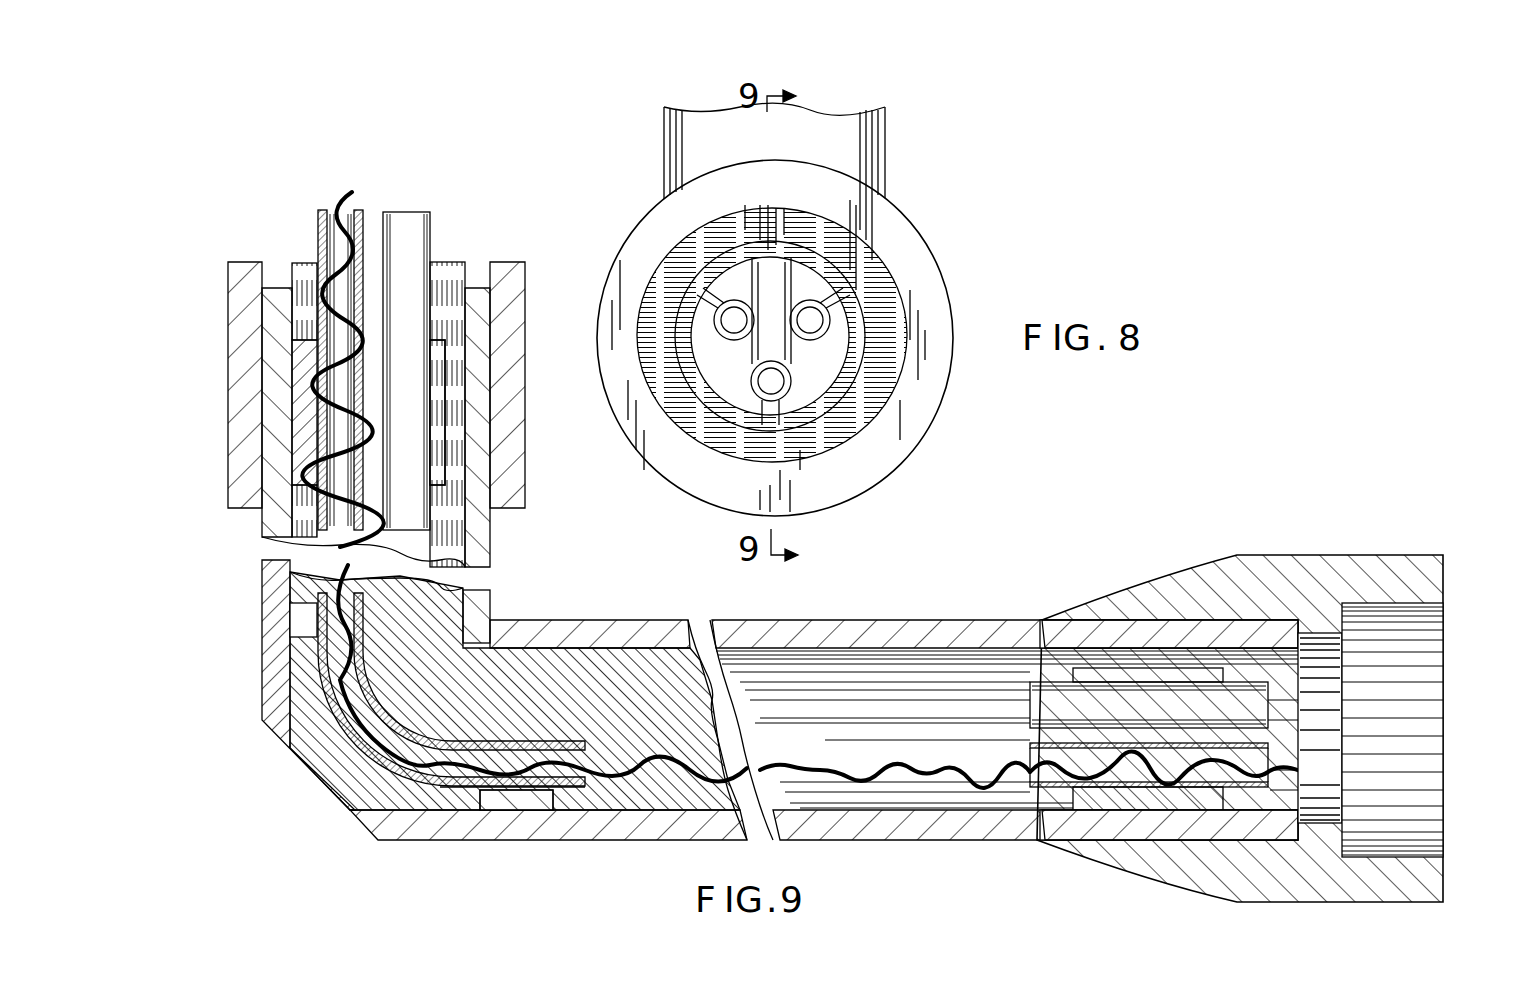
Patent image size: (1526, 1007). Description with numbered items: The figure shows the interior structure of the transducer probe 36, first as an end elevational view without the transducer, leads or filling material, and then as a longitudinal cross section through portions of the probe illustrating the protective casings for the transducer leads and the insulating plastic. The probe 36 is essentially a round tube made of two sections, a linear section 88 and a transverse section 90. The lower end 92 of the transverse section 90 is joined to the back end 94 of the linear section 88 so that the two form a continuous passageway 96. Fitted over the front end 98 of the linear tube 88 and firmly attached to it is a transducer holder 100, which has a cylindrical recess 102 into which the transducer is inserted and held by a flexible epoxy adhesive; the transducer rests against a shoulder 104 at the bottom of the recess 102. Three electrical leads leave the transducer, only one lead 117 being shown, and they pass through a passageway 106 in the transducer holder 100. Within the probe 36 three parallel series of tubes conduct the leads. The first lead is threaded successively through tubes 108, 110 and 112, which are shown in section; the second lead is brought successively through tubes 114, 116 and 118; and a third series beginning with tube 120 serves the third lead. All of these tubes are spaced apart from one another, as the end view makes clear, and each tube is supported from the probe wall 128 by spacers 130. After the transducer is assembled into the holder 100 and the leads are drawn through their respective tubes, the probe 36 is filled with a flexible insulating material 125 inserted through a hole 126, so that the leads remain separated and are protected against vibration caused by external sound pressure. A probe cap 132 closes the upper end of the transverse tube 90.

In FIG. 8, the transducer probe 36 is at (898, 168).
In FIG. 9, the transducer probe 36 is at (816, 616).
In FIG. 9, the linear section 88 is at (643, 841).
In FIG. 9, the transverse section 90 is at (493, 536).
In FIG. 9, the lower end 92 is at (262, 684).
In FIG. 9, the back end 94 is at (425, 841).
In FIG. 9, the continuous passageway 96 is at (352, 812).
In FIG. 9, the front end 98 is at (1105, 828).
In FIG. 8, the transducer holder 100 is at (872, 484).
In FIG. 9, the transducer holder 100 is at (1310, 555).
In FIG. 8, the cylindrical recess 102 is at (733, 462).
In FIG. 9, the cylindrical recess 102 is at (1413, 610).
In FIG. 8, the shoulder 104 is at (812, 447).
In FIG. 9, the shoulder 104 is at (1350, 628).
In FIG. 8, the passageway 106 is at (785, 256).
In FIG. 9, the passageway 106 is at (1342, 762).
In FIG. 8, the tube 108 is at (790, 384).
In FIG. 9, the tube 108 is at (1030, 747).
In FIG. 8, the tube 110 is at (752, 362).
In FIG. 9, the tube 110 is at (590, 760).
In FIG. 9, the tube 112 is at (340, 188).
In FIG. 9, the tube 114 is at (1030, 700).
In FIG. 8, the tube 116 is at (740, 341).
In FIG. 9, the lead 117 is at (873, 772).
In FIG. 9, the tube 118 is at (418, 212).
In FIG. 8, the tube 120 is at (808, 341).
In FIG. 9, the flexible insulating material 125 is at (715, 725).
In FIG. 9, the hole 126 is at (305, 765).
In FIG. 9, the probe wall 128 is at (820, 652).
In FIG. 9, the spacers 130 is at (1073, 674).
In FIG. 9, the probe cap 132 is at (228, 455).